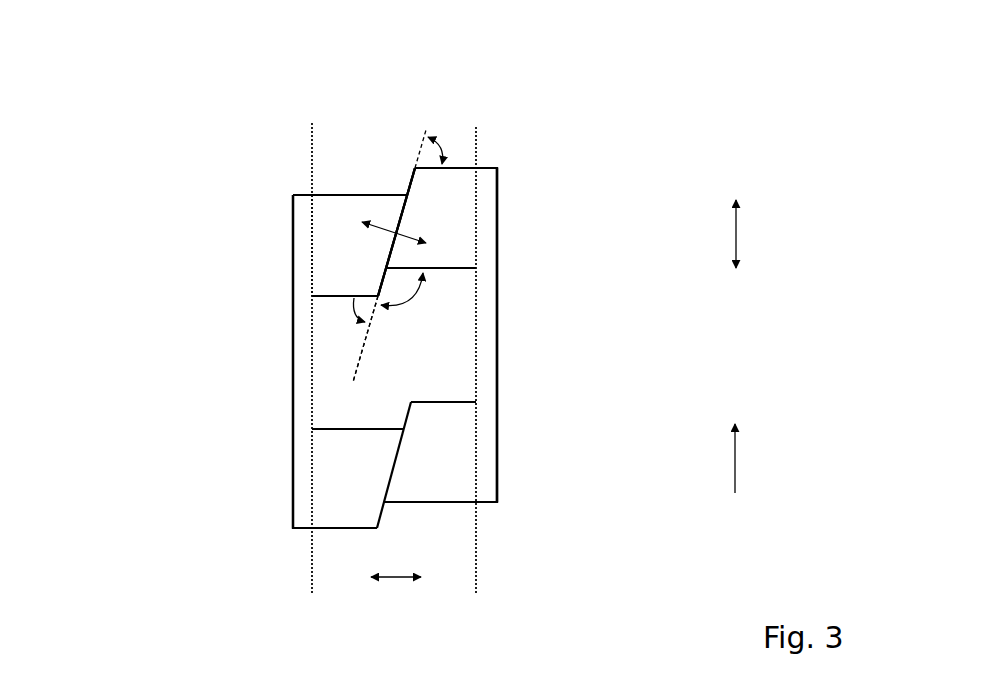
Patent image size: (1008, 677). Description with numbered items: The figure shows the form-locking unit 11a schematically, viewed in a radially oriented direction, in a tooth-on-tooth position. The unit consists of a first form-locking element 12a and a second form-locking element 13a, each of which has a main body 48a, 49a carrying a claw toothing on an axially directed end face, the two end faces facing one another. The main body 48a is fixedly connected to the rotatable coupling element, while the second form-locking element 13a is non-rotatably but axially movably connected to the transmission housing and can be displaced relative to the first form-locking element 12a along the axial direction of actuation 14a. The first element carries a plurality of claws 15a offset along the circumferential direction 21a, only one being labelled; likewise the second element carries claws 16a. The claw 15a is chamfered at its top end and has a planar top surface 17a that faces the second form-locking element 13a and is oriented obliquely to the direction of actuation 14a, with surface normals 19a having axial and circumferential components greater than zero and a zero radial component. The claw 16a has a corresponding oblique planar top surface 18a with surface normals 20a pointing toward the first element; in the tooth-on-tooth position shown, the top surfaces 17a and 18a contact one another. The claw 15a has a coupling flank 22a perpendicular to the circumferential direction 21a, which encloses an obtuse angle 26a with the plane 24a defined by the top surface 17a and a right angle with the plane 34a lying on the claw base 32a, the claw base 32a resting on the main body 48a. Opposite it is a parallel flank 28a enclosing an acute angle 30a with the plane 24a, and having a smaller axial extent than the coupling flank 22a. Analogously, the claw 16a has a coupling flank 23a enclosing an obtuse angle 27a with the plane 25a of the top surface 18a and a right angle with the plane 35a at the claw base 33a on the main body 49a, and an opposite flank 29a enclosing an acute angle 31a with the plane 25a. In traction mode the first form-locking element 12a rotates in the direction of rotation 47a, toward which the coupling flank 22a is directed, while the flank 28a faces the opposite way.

The form-locking unit 11a is at (150, 186).
The first form-locking element 12a is at (296, 545).
The second form-locking element 13a is at (489, 509).
The direction of actuation 14a is at (398, 577).
The claw 15a is at (293, 197).
The claw 16a is at (468, 182).
The top surface 17a is at (406, 209).
The top surface 18a is at (381, 255).
The surface normals 19a is at (426, 243).
The surface normals 20a is at (334, 189).
The circumferential direction 21a is at (737, 232).
The coupling flank 22a is at (386, 222).
The coupling flank 23a is at (457, 274).
The plane 24a is at (428, 152).
The plane 25a is at (353, 366).
The obtuse angle 26a is at (366, 190).
The obtuse angle 27a is at (407, 302).
The flank 28a is at (321, 300).
The flank 29a is at (460, 164).
The acute angle 30a is at (353, 300).
The acute angle 31a is at (442, 164).
The claw base 32a is at (308, 224).
The claw base 33a is at (484, 182).
The plane 34a is at (311, 588).
The plane 35a is at (476, 578).
The direction of rotation 47a is at (736, 455).
The main body 48a is at (300, 500).
The main body 49a is at (488, 458).